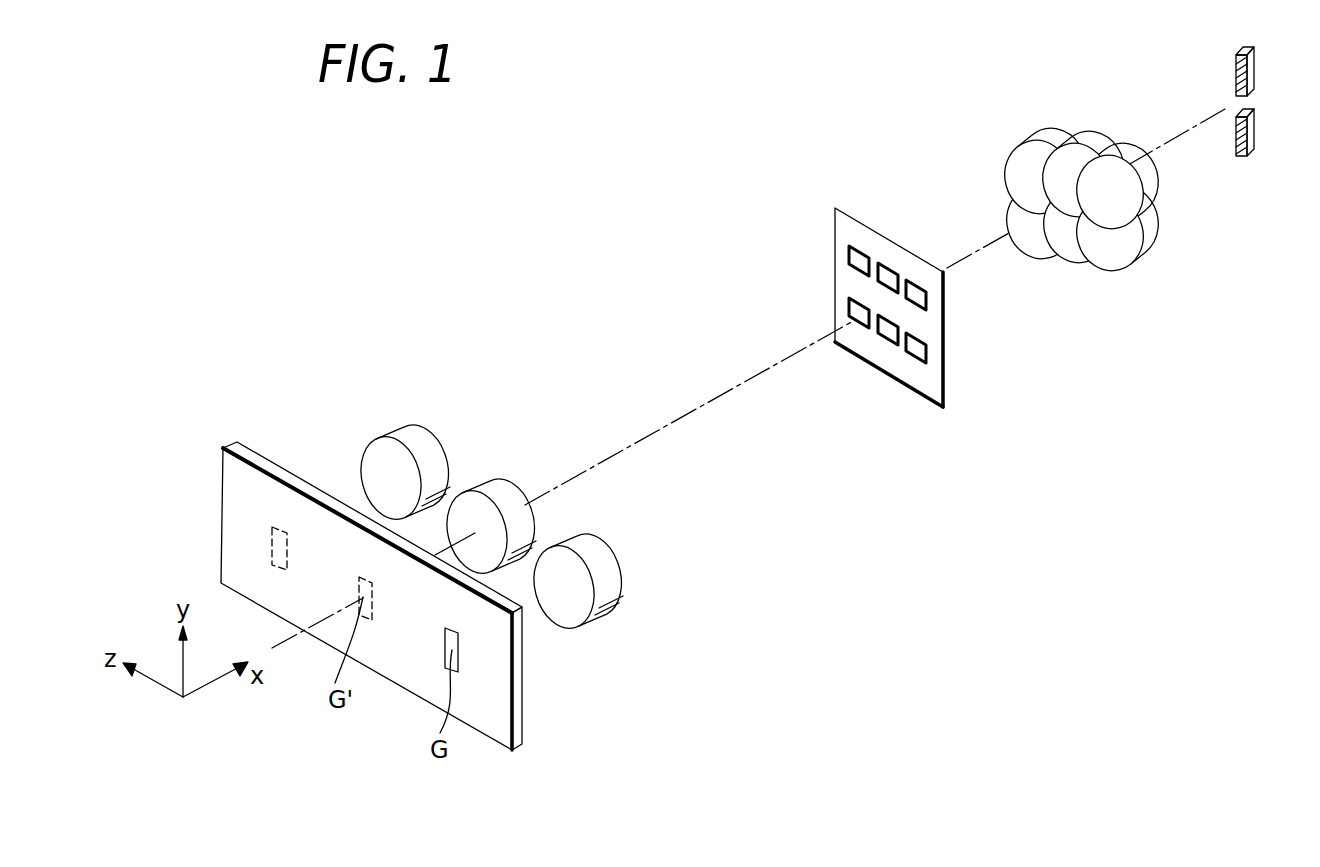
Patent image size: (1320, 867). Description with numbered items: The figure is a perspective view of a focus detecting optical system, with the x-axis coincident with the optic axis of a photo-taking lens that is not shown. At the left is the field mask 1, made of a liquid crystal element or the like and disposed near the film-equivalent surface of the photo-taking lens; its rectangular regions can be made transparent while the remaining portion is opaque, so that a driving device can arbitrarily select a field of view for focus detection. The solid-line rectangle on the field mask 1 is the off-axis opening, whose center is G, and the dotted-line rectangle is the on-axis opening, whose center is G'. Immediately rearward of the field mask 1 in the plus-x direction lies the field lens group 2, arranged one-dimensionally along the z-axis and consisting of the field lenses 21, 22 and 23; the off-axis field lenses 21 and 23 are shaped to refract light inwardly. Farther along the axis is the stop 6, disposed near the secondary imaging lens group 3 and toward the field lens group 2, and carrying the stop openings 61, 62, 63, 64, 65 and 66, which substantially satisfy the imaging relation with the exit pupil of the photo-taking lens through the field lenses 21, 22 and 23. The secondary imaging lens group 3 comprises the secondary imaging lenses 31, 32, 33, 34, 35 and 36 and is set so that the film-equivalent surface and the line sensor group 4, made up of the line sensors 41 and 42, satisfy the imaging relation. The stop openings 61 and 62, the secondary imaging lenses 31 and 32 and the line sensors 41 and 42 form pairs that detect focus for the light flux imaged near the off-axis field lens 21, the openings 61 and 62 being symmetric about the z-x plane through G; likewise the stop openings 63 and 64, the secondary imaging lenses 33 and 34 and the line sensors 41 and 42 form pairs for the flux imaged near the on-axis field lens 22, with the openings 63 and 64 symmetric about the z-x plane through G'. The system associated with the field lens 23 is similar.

The field mask 1 is at (222, 483).
The field lens group 2 is at (500, 491).
The field lens 21 is at (605, 560).
The field lens 22 is at (490, 488).
The field lens 23 is at (370, 458).
The stop 6 is at (887, 275).
The stop opening 61 is at (923, 295).
The stop opening 62 is at (923, 350).
The stop opening 63 is at (888, 275).
The stop opening 64 is at (887, 333).
The stop opening 65 is at (858, 253).
The stop opening 66 is at (860, 315).
The secondary imaging lens group 3 is at (1079, 173).
The secondary imaging lens 31 is at (1130, 198).
The secondary imaging lens 32 is at (1138, 238).
The secondary imaging lens 33 is at (1080, 153).
The secondary imaging lens 34 is at (1062, 242).
The secondary imaging lens 35 is at (1022, 155).
The secondary imaging lens 36 is at (1013, 195).
The line sensor group 4 is at (1244, 85).
The line sensor 41 is at (1258, 62).
The line sensor 42 is at (1257, 131).